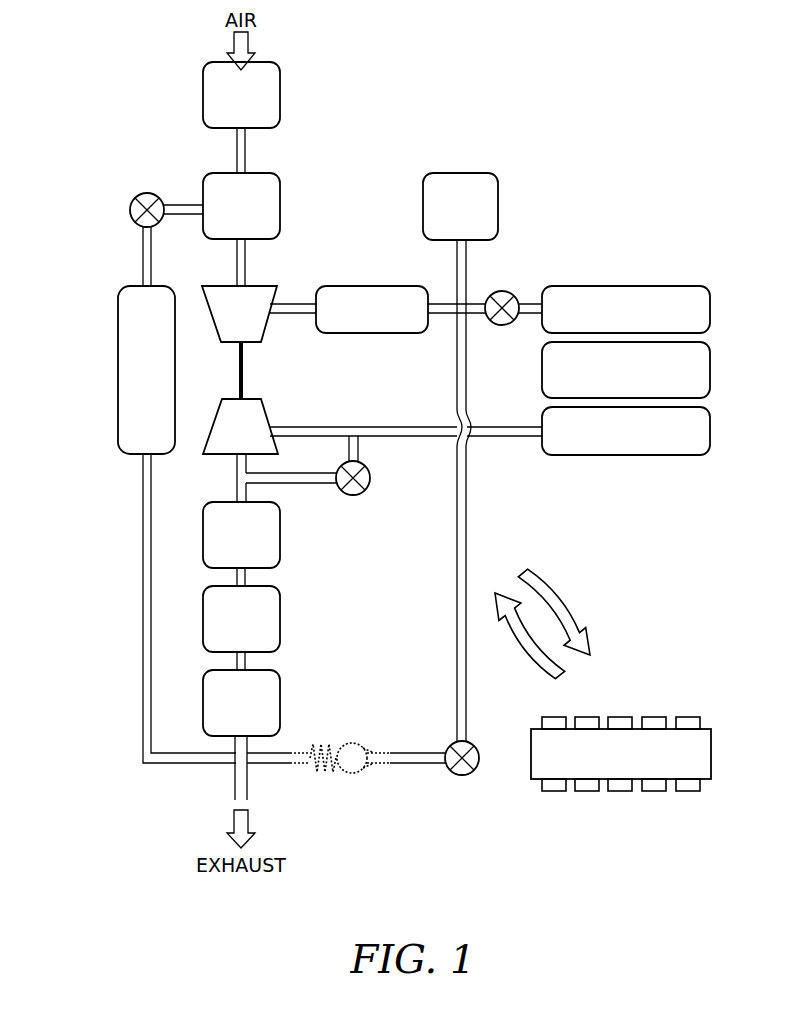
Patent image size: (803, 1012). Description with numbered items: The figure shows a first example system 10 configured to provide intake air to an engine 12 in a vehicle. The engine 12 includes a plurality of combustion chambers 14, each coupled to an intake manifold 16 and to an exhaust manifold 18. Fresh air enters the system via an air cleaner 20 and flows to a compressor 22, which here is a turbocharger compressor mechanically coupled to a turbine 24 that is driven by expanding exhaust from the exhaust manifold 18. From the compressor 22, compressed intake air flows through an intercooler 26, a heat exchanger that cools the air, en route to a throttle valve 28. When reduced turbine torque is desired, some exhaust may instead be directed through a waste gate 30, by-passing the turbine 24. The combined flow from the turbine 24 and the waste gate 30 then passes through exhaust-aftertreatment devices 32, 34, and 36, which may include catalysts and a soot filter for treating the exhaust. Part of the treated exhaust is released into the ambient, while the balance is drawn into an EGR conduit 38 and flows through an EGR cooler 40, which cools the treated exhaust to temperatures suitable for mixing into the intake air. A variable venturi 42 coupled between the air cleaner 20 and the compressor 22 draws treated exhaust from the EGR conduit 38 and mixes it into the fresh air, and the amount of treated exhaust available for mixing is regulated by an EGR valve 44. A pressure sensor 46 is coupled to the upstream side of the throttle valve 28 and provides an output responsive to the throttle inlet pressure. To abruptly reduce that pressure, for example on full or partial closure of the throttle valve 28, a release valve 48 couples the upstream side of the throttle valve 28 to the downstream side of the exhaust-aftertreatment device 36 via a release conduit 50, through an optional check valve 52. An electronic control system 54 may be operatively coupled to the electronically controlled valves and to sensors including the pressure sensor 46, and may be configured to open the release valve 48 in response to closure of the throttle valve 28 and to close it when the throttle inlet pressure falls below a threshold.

The system 10 is at (373, 101).
The engine 12 is at (661, 370).
The combustion chambers 14 is at (638, 381).
The intake manifold 16 is at (638, 321).
The exhaust manifold 18 is at (638, 442).
The air cleaner 20 is at (253, 107).
The compressor 22 is at (253, 326).
The turbine 24 is at (253, 439).
The intercooler 26 is at (384, 321).
The throttle valve 28 is at (500, 290).
The waste gate 30 is at (376, 477).
The exhaust-aftertreatment device 32 is at (253, 546).
The exhaust-aftertreatment device 34 is at (253, 630).
The exhaust-aftertreatment device 36 is at (253, 714).
The EGR conduit 38 is at (143, 587).
The EGR cooler 40 is at (159, 381).
The variable venturi 42 is at (253, 218).
The EGR valve 44 is at (130, 211).
The pressure sensor 46 is at (473, 218).
The release valve 48 is at (462, 778).
The release conduit 50 is at (467, 472).
The check valve 52 is at (335, 738).
The electronic control system 54 is at (633, 765).